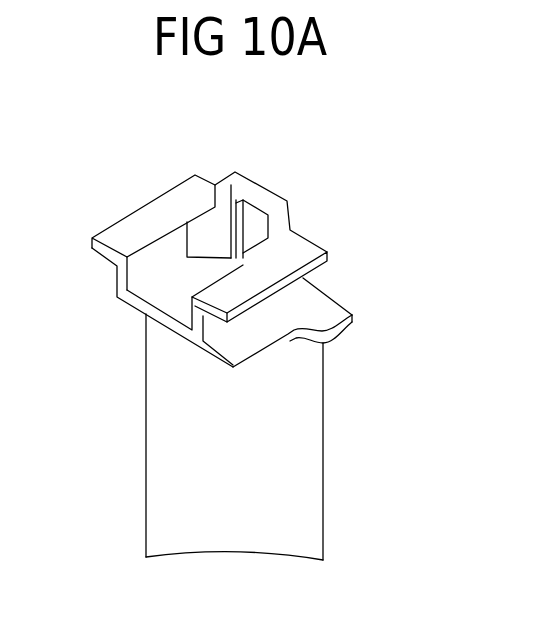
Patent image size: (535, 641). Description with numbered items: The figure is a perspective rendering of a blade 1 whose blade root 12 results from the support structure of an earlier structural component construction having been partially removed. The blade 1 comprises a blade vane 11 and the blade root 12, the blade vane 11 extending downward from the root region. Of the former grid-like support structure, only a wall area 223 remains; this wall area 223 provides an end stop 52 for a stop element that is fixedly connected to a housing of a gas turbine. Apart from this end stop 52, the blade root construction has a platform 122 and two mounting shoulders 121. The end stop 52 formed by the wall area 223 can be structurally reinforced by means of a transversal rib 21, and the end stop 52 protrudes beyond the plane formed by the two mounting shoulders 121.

The blade 1 is at (120, 465).
The blade vane 11 is at (312, 494).
The blade root 12 is at (117, 283).
The mounting shoulder 121 is at (128, 228).
The platform 122 is at (140, 312).
The transversal rib 21 is at (234, 200).
The wall area 223 is at (266, 191).
The end stop 52 is at (285, 200).